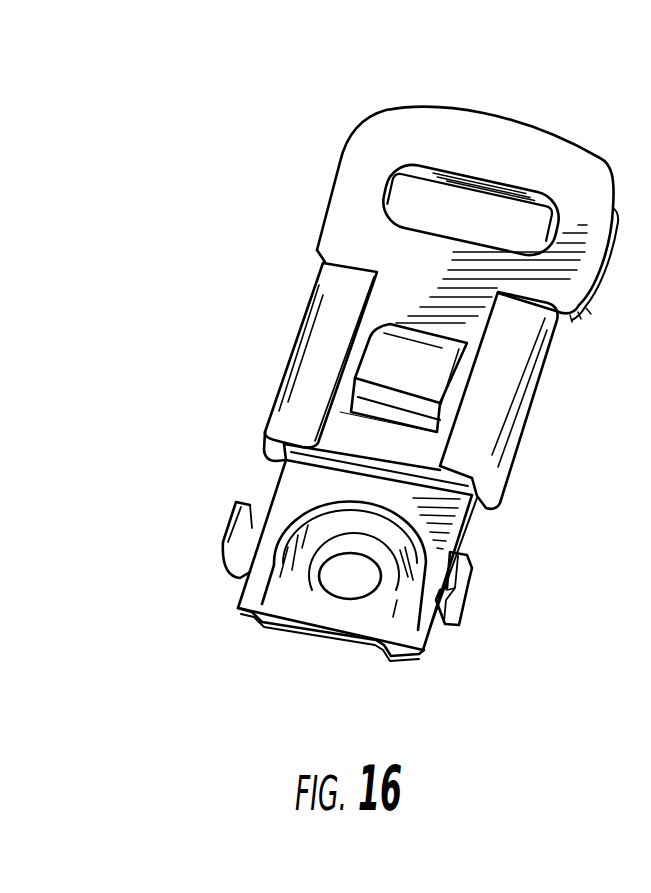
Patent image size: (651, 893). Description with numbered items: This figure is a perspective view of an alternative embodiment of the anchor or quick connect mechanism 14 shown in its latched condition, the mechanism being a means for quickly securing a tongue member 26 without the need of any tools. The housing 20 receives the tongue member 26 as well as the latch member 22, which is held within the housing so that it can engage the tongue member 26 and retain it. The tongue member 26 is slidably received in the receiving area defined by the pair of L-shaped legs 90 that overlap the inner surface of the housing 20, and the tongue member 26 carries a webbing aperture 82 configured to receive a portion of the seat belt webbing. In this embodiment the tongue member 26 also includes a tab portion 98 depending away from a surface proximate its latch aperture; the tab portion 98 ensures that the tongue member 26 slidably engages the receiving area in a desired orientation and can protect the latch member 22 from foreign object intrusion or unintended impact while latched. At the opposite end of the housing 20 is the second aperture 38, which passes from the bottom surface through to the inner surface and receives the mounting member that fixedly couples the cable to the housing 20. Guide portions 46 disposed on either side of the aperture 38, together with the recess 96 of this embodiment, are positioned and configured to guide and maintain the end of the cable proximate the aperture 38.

The anchor or quick connect mechanism 14 is at (97, 279).
The housing 20 is at (272, 495).
The latch member 22 is at (412, 421).
The tongue member 26 is at (382, 110).
The second aperture 38 is at (350, 576).
The guide portion 46 is at (222, 546).
The webbing aperture 82 is at (498, 220).
The L-shaped legs 90 is at (293, 342).
The recess 96 is at (255, 623).
The tab portion 98 is at (423, 372).